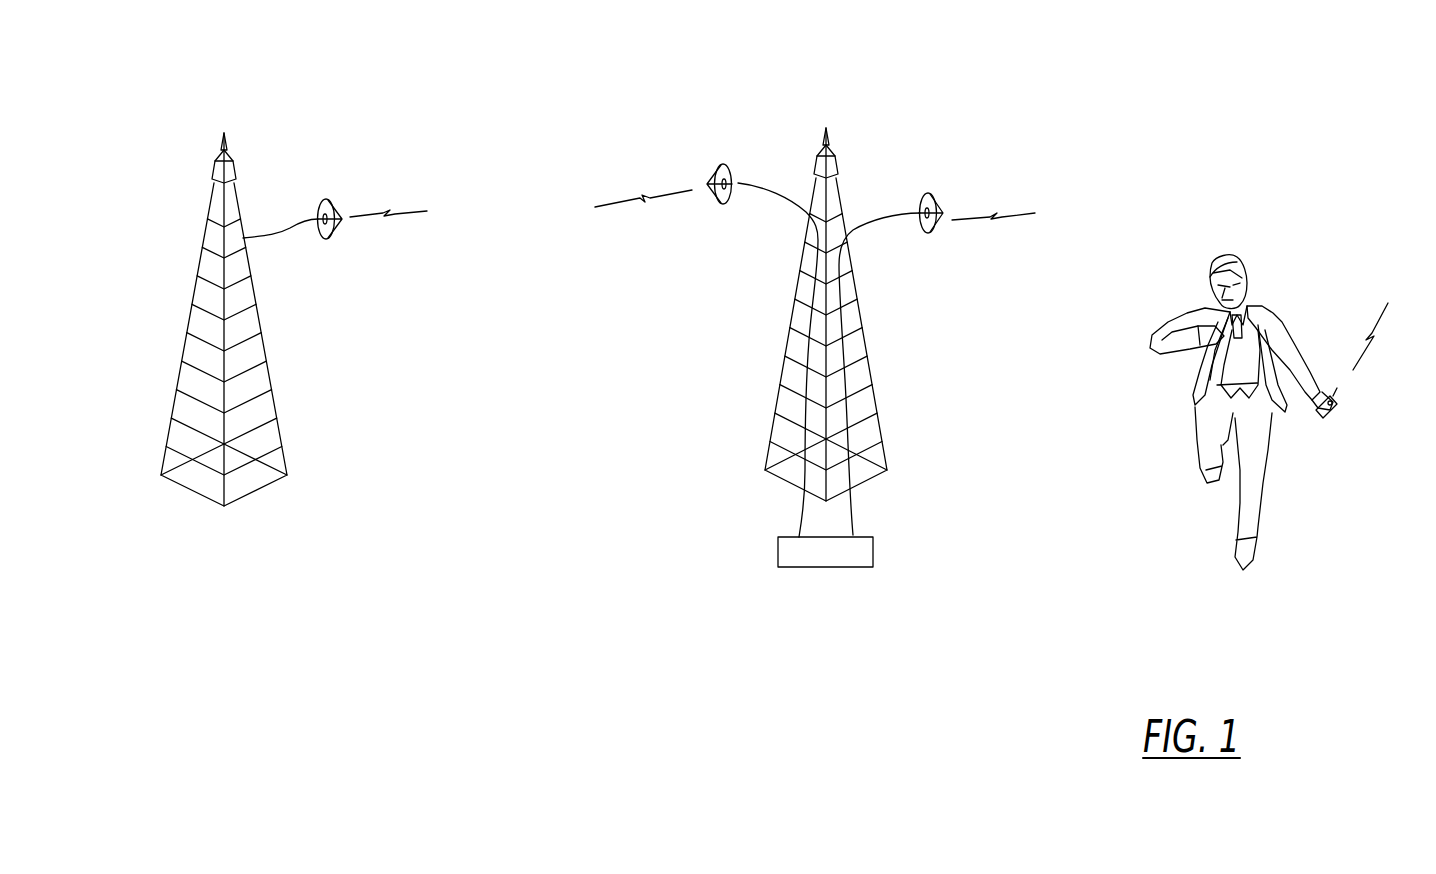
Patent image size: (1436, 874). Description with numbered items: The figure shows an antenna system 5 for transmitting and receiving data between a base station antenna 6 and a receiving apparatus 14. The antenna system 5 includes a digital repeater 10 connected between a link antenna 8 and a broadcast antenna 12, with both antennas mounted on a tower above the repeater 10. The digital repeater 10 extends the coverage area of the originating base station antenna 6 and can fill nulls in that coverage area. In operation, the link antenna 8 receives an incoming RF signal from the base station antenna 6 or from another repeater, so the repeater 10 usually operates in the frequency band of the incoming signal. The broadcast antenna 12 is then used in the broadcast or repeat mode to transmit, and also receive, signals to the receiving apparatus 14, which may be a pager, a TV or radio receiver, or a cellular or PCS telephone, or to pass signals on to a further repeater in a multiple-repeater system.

The antenna system 5 is at (1117, 71).
The base station antenna 6 is at (327, 198).
The link antenna 8 is at (727, 205).
The digital repeater 10 is at (873, 548).
The broadcast antenna 12 is at (930, 193).
The receiving apparatus 14 is at (1333, 412).